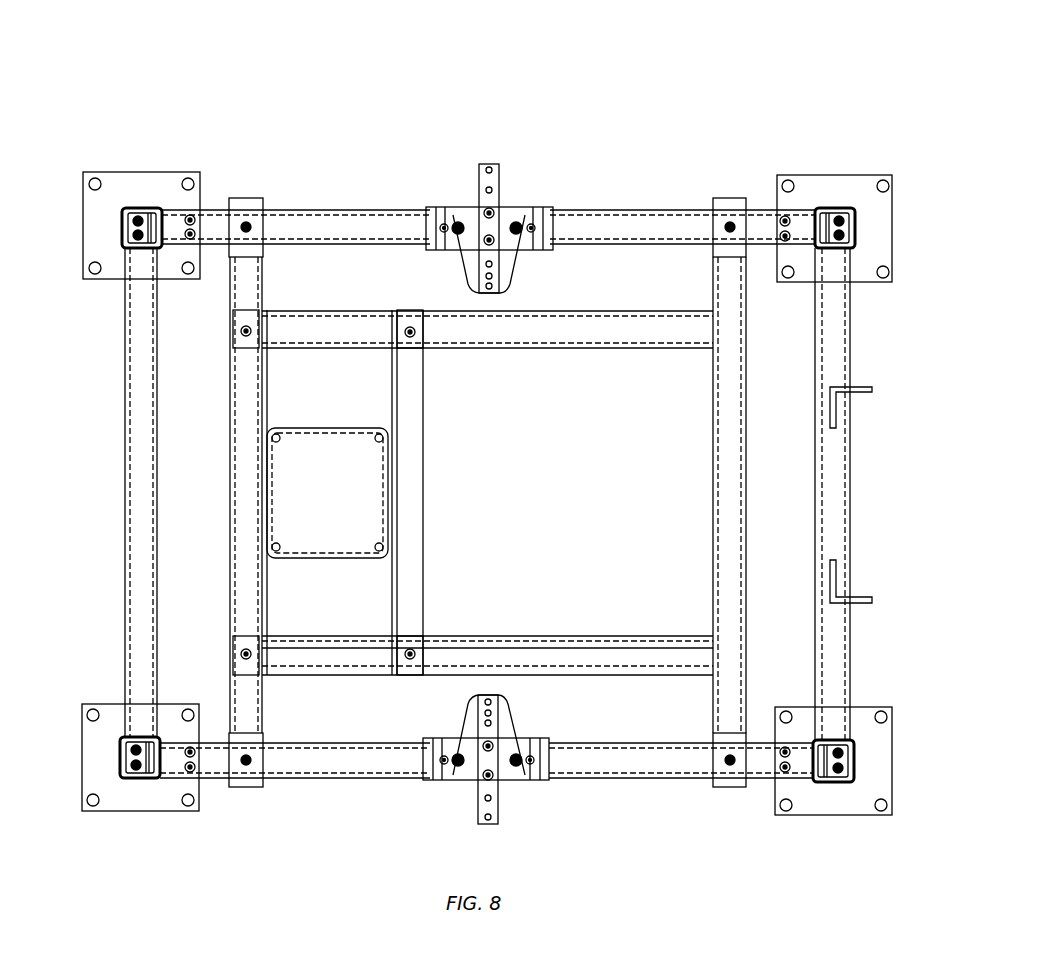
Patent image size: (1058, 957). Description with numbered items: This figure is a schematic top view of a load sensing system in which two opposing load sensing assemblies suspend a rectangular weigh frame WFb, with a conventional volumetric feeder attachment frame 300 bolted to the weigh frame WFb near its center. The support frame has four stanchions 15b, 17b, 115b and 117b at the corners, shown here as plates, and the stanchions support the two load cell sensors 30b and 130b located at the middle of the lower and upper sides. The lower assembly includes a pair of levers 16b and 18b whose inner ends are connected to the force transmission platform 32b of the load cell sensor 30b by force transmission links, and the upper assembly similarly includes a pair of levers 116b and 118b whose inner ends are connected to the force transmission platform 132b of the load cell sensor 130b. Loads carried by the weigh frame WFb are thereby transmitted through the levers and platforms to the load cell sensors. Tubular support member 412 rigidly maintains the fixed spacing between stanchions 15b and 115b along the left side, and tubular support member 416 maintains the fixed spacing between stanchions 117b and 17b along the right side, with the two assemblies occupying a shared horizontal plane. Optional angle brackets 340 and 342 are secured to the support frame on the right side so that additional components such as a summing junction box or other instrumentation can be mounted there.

The stanchion 115b is at (140, 205).
The lever 116b is at (337, 203).
The load cell sensor 130b is at (505, 193).
The lever 118b is at (613, 210).
The stanchion 117b is at (832, 205).
The force transmission platform 132b is at (525, 263).
The tubular support member 412 is at (124, 390).
The angle bracket 340 is at (866, 382).
The tubular support member 416 is at (852, 517).
The weigh frame WFb is at (636, 352).
The volumetric feeder attachment frame 300 is at (262, 510).
The angle bracket 342 is at (865, 605).
The force transmission platform 32b is at (521, 721).
The stanchion 15b is at (148, 782).
The lever 16b is at (388, 780).
The load cell sensor 30b is at (506, 797).
The lever 18b is at (620, 780).
The stanchion 17b is at (830, 785).